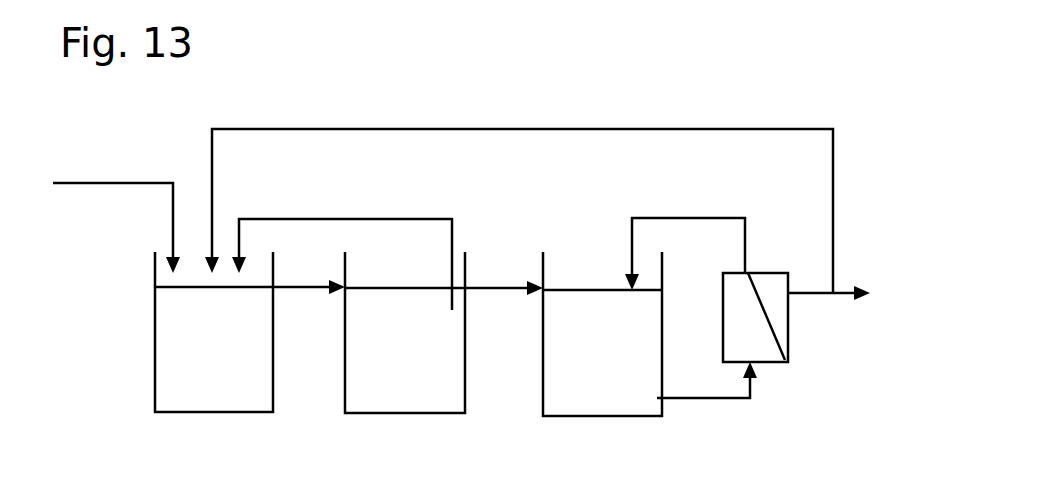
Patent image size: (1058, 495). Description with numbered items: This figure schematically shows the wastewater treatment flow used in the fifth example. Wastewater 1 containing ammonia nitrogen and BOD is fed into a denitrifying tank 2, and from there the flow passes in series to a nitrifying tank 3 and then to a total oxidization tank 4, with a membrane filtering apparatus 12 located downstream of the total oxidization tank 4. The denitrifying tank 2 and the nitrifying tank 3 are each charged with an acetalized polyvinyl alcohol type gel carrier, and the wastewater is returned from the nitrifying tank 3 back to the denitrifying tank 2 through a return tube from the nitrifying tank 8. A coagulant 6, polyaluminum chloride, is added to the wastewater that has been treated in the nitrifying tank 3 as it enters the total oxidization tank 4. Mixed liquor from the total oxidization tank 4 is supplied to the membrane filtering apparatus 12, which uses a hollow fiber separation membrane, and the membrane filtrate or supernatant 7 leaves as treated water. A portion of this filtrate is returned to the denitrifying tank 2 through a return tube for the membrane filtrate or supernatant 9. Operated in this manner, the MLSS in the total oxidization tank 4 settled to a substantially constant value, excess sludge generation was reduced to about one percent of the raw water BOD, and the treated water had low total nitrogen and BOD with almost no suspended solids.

The wastewater 1 is at (130, 183).
The denitrifying tank 2 is at (247, 412).
The nitrifying tank 3 is at (447, 413).
The total oxidization tank 4 is at (632, 416).
The coagulant 6 is at (564, 274).
The membrane filtrate or supernatant 7 is at (842, 282).
The return tube from the nitrifying tank 8 is at (273, 218).
The return tube for the membrane filtrate or supernatant 9 is at (245, 128).
The membrane filtering apparatus 12 is at (790, 327).